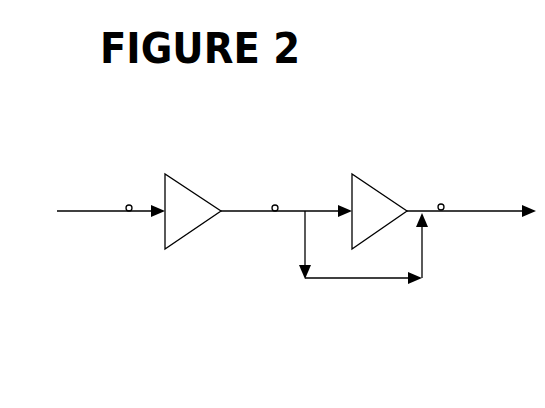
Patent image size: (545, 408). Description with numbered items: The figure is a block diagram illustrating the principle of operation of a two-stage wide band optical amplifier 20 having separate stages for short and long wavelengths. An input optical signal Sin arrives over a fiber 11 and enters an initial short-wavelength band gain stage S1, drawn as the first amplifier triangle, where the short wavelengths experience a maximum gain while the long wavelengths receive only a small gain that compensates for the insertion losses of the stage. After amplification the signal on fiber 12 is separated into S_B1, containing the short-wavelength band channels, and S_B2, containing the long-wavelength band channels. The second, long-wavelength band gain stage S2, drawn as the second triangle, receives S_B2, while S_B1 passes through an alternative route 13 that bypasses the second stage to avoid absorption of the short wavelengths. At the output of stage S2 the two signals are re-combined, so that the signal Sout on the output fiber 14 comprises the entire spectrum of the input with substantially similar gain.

The optical amplifier 20 is at (280, 150).
The fiber 11 is at (103, 211).
The fiber 12 is at (253, 213).
The alternative route 13 is at (358, 281).
The output fiber 14 is at (463, 212).
The short-wavelength band gain stage S1 is at (165, 243).
The long-wavelength band gain stage S2 is at (377, 186).